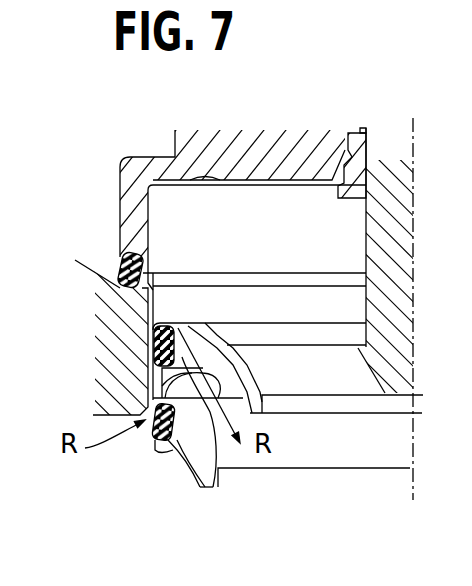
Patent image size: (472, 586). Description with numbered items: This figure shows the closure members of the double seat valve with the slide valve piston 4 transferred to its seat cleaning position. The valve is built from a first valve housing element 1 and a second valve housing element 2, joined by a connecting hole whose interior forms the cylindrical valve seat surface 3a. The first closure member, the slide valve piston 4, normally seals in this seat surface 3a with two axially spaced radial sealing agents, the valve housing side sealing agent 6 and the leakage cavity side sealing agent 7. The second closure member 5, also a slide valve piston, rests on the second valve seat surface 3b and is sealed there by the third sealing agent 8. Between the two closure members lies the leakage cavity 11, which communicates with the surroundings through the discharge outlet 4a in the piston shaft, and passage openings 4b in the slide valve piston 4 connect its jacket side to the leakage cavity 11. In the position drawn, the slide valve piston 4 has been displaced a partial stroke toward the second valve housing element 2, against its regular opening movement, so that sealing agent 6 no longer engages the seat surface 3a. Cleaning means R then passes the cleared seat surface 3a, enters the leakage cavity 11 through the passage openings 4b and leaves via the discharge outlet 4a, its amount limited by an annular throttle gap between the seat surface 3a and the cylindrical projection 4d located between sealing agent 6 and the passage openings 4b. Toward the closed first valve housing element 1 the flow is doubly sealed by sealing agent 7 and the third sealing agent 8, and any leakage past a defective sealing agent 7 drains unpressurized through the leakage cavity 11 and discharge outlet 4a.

The first valve housing element 1 is at (88, 83).
The second valve housing element 2 is at (88, 547).
The cylindrical valve seat surface 3a is at (147, 384).
The second valve seat surface 3b is at (118, 267).
The first closure member 4 is at (213, 322).
The discharge outlet 4a is at (344, 372).
The passage openings 4b is at (205, 322).
The cylindrical projection 4d is at (210, 324).
The second closure member 5 is at (123, 160).
The valve housing side sealing agent 6 is at (153, 428).
The leakage cavity side sealing agent 7 is at (147, 343).
The third sealing agent 8 is at (122, 257).
The leakage cavity 11 is at (313, 259).